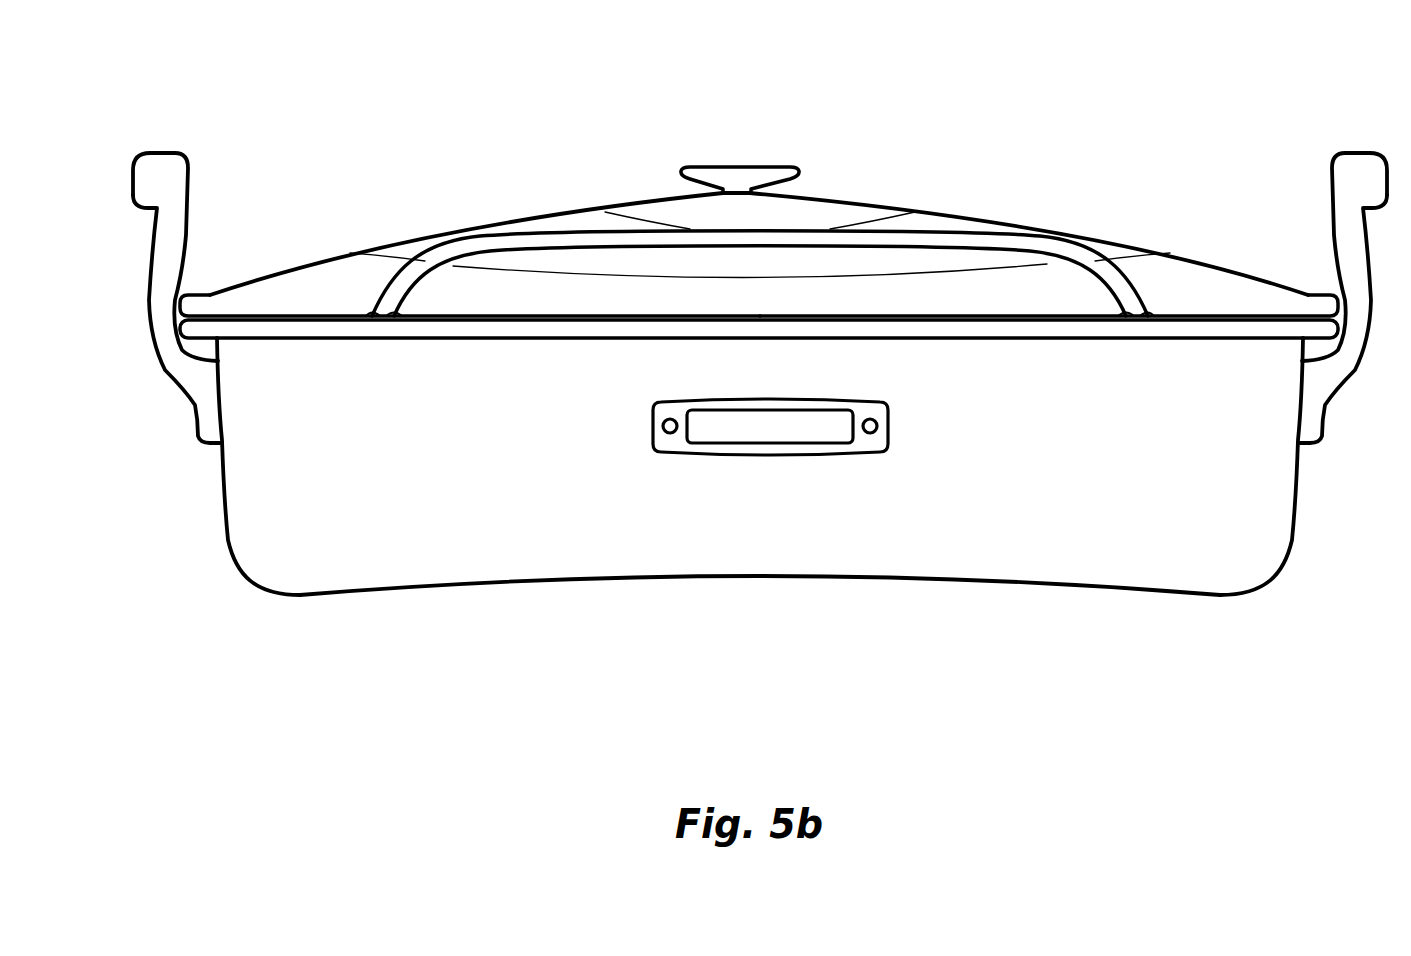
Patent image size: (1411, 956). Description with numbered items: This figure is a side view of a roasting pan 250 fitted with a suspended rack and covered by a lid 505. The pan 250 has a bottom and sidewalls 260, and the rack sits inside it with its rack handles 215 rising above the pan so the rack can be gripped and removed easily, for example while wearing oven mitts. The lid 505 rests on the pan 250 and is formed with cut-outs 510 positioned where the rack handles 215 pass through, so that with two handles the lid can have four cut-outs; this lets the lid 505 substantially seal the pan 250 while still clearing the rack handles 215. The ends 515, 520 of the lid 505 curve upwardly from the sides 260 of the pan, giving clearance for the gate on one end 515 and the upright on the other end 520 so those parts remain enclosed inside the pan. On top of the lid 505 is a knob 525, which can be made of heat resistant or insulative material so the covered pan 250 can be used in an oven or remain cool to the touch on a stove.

The roasting pan 250 is at (737, 448).
The sidewalls 260 is at (222, 500).
The rack handles 215 is at (943, 233).
The lid 505 is at (560, 212).
The cut-outs 510 is at (398, 322).
The end of the lid 515 is at (1273, 270).
The end of the lid 520 is at (255, 270).
The knob 525 is at (716, 166).